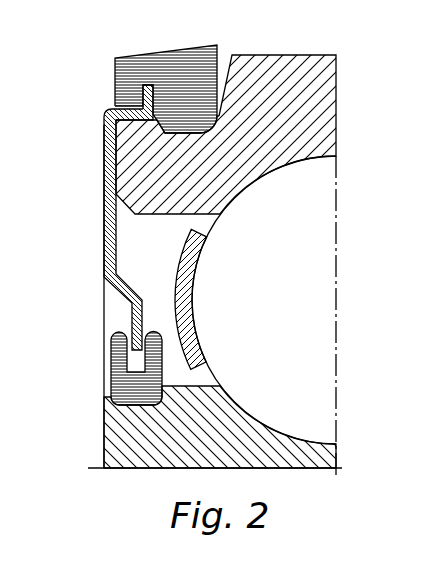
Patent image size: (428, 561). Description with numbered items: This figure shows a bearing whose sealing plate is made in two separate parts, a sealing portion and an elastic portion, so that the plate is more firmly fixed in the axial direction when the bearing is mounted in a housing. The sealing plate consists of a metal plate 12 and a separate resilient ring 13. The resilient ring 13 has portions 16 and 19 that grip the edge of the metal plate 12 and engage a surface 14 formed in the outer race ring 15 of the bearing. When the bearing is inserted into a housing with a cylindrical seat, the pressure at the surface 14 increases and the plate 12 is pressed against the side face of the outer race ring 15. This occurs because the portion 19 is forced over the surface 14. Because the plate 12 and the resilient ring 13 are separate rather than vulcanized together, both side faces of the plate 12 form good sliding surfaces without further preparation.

The metal plate 12 is at (110, 235).
The resilient ring 13 is at (157, 65).
The surface 14 is at (153, 130).
The outer race ring 15 is at (300, 143).
The gripping portion 16 is at (128, 93).
The engaging portion 19 is at (197, 92).